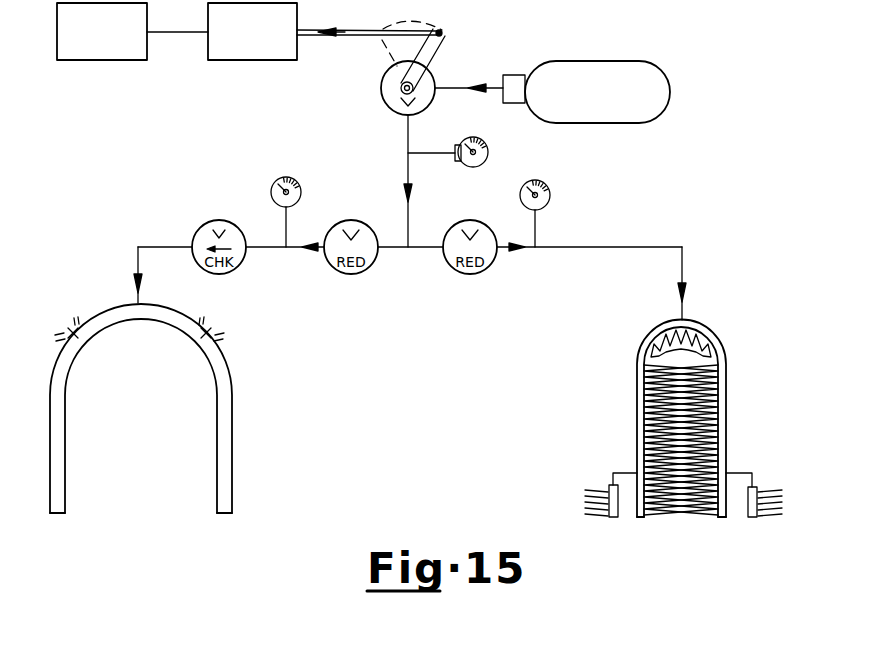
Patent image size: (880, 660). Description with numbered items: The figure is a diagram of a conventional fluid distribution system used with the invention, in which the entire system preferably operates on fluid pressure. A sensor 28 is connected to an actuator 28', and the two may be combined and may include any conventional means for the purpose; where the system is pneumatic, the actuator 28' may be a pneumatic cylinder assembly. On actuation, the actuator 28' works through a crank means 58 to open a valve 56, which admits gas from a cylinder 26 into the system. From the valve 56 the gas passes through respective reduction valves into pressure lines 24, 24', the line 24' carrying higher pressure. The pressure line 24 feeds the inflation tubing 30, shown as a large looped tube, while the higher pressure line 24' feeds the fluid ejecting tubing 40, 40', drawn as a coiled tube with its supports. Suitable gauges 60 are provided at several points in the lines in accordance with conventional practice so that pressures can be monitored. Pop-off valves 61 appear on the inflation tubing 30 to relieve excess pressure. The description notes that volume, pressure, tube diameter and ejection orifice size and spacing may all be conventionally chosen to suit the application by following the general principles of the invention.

The pressure line 24 is at (302, 212).
The higher pressure line 24' is at (573, 213).
The cylinder 26 is at (670, 92).
The sensor 28 is at (102, 48).
The actuator 28' is at (252, 48).
The inflation tubing 30 is at (228, 370).
The fluid ejecting tubing 40 is at (704, 419).
The fluid ejecting tubing 40' is at (694, 483).
The valve 56 is at (382, 100).
The crank means 58 is at (438, 50).
The gauge 60 is at (488, 152).
The pop-off valve 61 is at (70, 330).